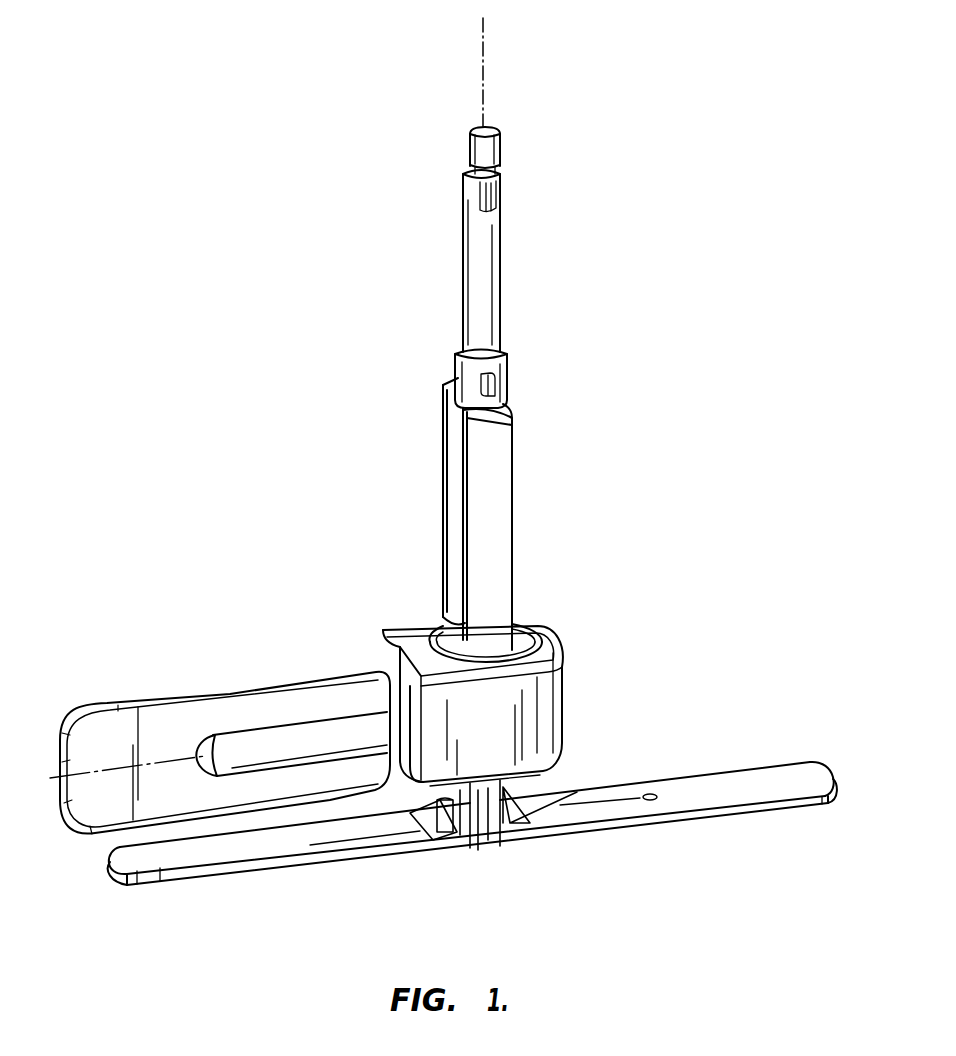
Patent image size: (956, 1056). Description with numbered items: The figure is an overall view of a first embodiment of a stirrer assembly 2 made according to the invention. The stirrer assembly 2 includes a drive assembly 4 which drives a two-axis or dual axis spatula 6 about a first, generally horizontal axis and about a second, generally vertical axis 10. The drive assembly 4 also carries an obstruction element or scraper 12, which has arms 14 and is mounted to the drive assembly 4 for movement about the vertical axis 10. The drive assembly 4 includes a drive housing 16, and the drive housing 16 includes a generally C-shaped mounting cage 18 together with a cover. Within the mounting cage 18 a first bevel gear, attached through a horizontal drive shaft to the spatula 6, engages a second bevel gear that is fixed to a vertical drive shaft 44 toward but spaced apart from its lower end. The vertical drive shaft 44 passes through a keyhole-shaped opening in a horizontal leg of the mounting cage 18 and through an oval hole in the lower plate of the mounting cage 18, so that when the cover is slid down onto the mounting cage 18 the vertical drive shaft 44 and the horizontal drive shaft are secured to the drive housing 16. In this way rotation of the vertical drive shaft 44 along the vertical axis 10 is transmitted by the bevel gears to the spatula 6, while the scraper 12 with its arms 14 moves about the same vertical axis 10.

The stirrer assembly 2 is at (802, 262).
The drive assembly 4 is at (569, 390).
The spatula 6 is at (232, 675).
The vertical axis 10 is at (490, 52).
The scraper 12 is at (817, 760).
The arms 14 is at (310, 845).
The drive housing 16 is at (558, 640).
The mounting cage 18 is at (42, 776).
The vertical drive shaft 44 is at (492, 270).